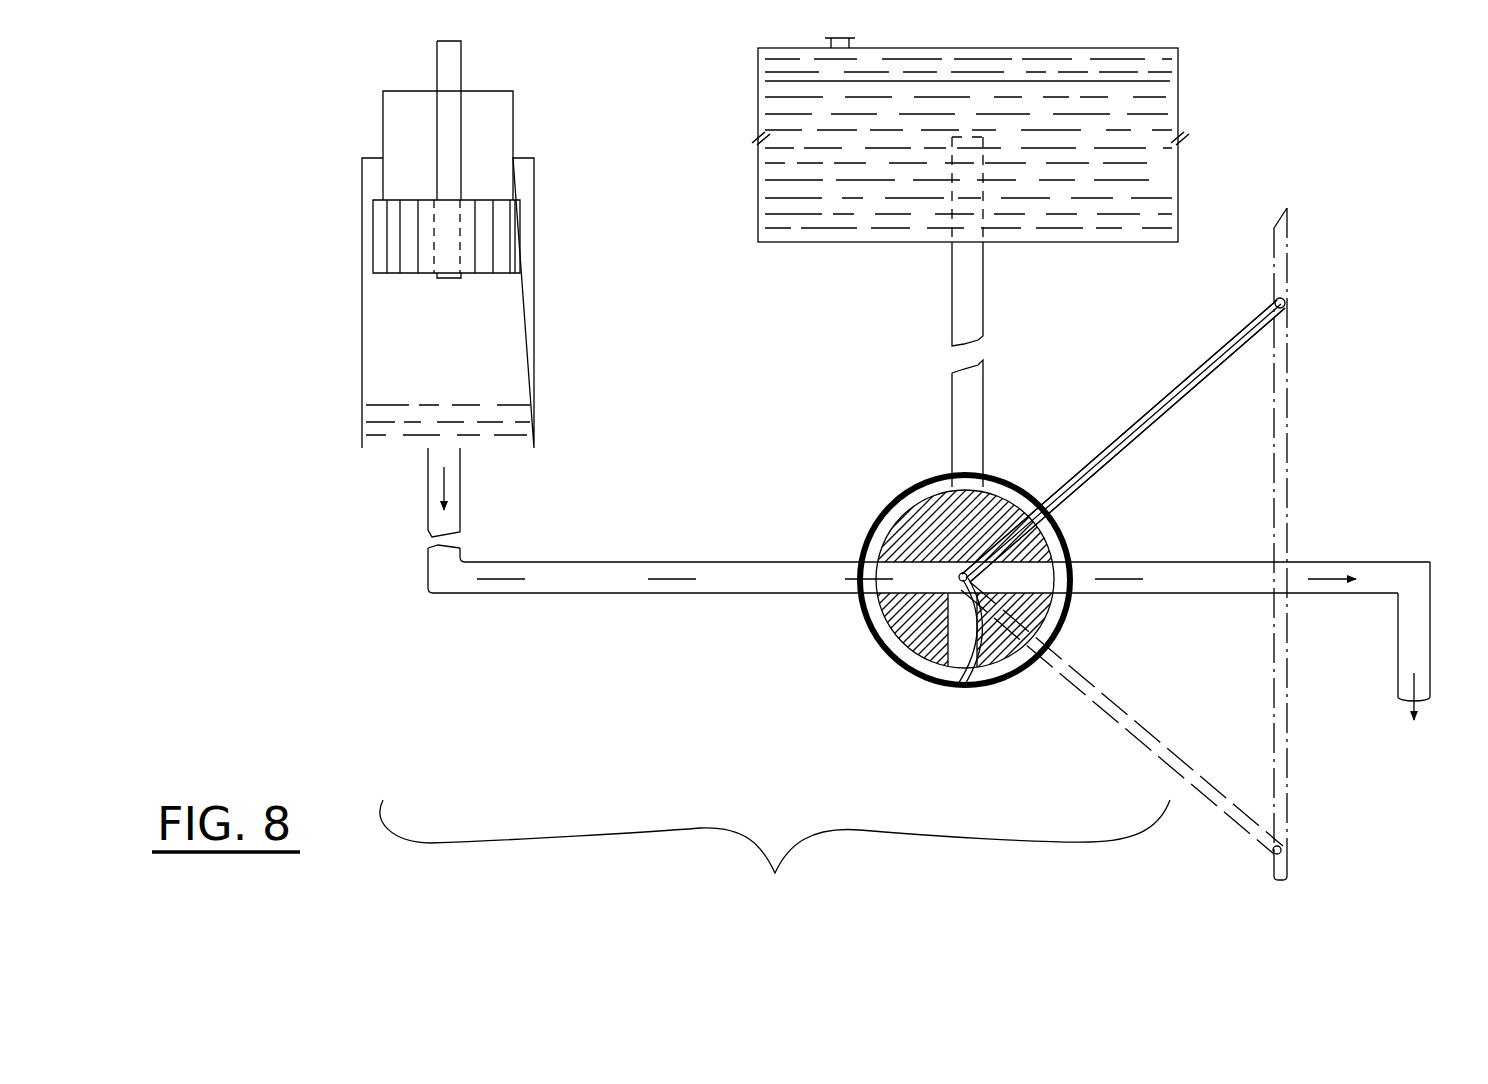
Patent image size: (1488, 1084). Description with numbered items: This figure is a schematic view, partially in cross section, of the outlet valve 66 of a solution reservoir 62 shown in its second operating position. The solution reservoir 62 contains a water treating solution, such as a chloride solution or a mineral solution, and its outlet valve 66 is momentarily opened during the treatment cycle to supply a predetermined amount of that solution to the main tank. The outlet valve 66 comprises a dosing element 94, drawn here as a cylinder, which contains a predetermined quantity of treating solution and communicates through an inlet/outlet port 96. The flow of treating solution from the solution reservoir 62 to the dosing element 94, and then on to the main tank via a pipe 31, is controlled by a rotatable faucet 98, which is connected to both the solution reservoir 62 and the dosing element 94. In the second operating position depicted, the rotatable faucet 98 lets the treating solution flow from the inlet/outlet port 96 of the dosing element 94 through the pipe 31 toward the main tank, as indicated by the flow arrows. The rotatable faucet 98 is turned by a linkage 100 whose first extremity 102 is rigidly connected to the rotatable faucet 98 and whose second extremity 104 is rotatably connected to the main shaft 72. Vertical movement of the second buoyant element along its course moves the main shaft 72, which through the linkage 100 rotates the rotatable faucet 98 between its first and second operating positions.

The pipe 31 is at (1405, 567).
The solution reservoir 62 is at (1170, 98).
The outlet valve 66 is at (905, 732).
The main shaft 72 is at (1280, 445).
The dosing element 94 is at (522, 337).
The inlet/outlet port 96 is at (442, 455).
The rotatable faucet 98 is at (870, 637).
The linkage 100 is at (1147, 417).
The first extremity 102 is at (947, 695).
The second extremity 104 is at (1290, 293).